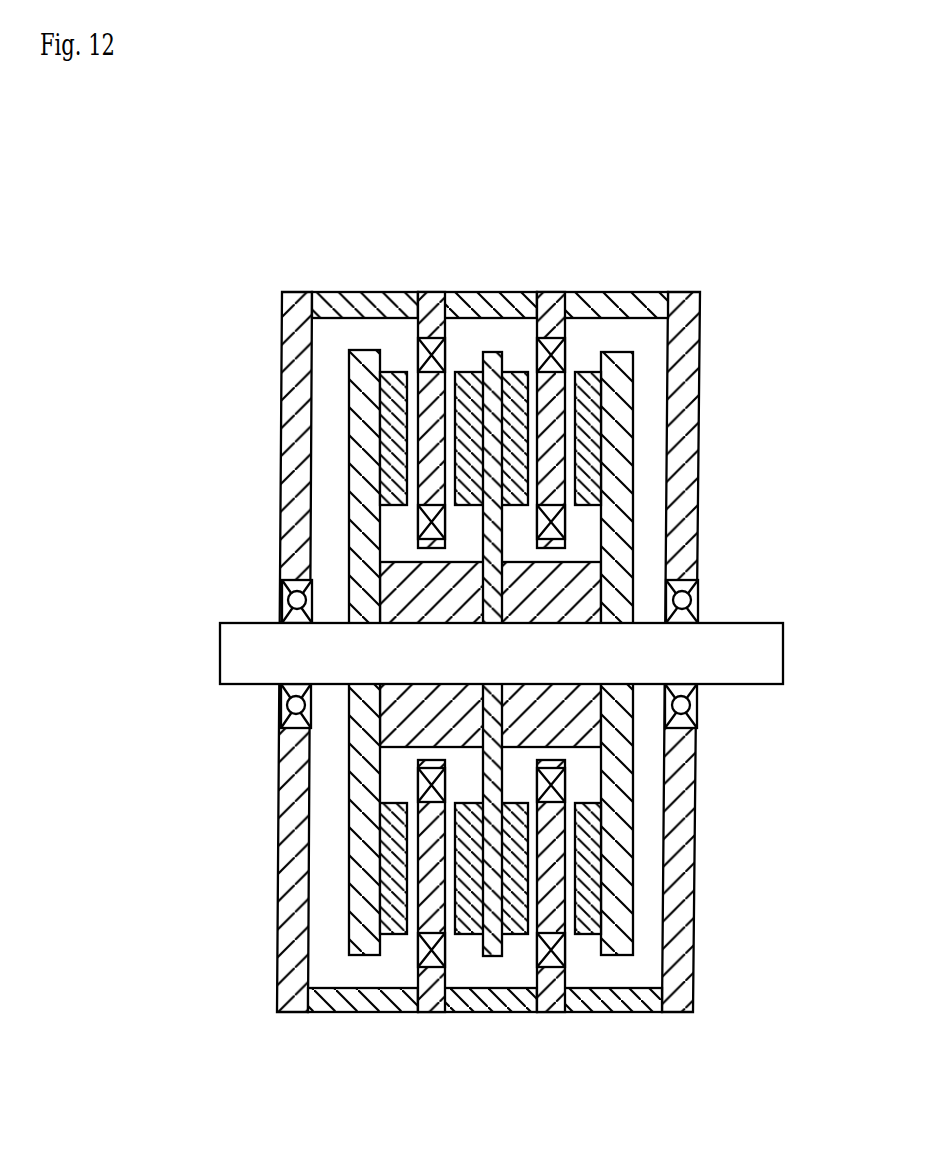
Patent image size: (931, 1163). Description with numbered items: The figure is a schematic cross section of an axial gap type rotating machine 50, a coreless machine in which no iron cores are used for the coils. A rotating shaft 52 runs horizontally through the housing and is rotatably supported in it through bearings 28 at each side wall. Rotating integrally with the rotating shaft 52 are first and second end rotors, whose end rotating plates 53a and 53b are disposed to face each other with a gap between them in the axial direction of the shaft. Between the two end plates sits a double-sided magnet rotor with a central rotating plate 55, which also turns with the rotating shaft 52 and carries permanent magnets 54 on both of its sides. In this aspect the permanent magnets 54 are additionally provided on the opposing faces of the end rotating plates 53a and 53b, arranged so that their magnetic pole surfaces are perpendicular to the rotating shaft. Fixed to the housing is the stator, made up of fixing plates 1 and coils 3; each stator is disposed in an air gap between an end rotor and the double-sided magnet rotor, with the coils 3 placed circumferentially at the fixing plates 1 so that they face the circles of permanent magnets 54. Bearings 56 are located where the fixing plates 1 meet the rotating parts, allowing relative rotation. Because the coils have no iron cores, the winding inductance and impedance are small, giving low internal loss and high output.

The fixing plate 1 is at (492, 676).
The coil 3 is at (422, 357).
The bearing 28 is at (282, 592).
The axial gap type rotating machine 50 is at (690, 227).
The rotating shaft 52 is at (763, 657).
The end rotating plate 53a is at (625, 360).
The end rotating plate 53b is at (357, 370).
The permanent magnet 54 is at (388, 422).
The rotating plate of double-sided magnet rotor 55 is at (493, 363).
The bearing 56 is at (433, 292).